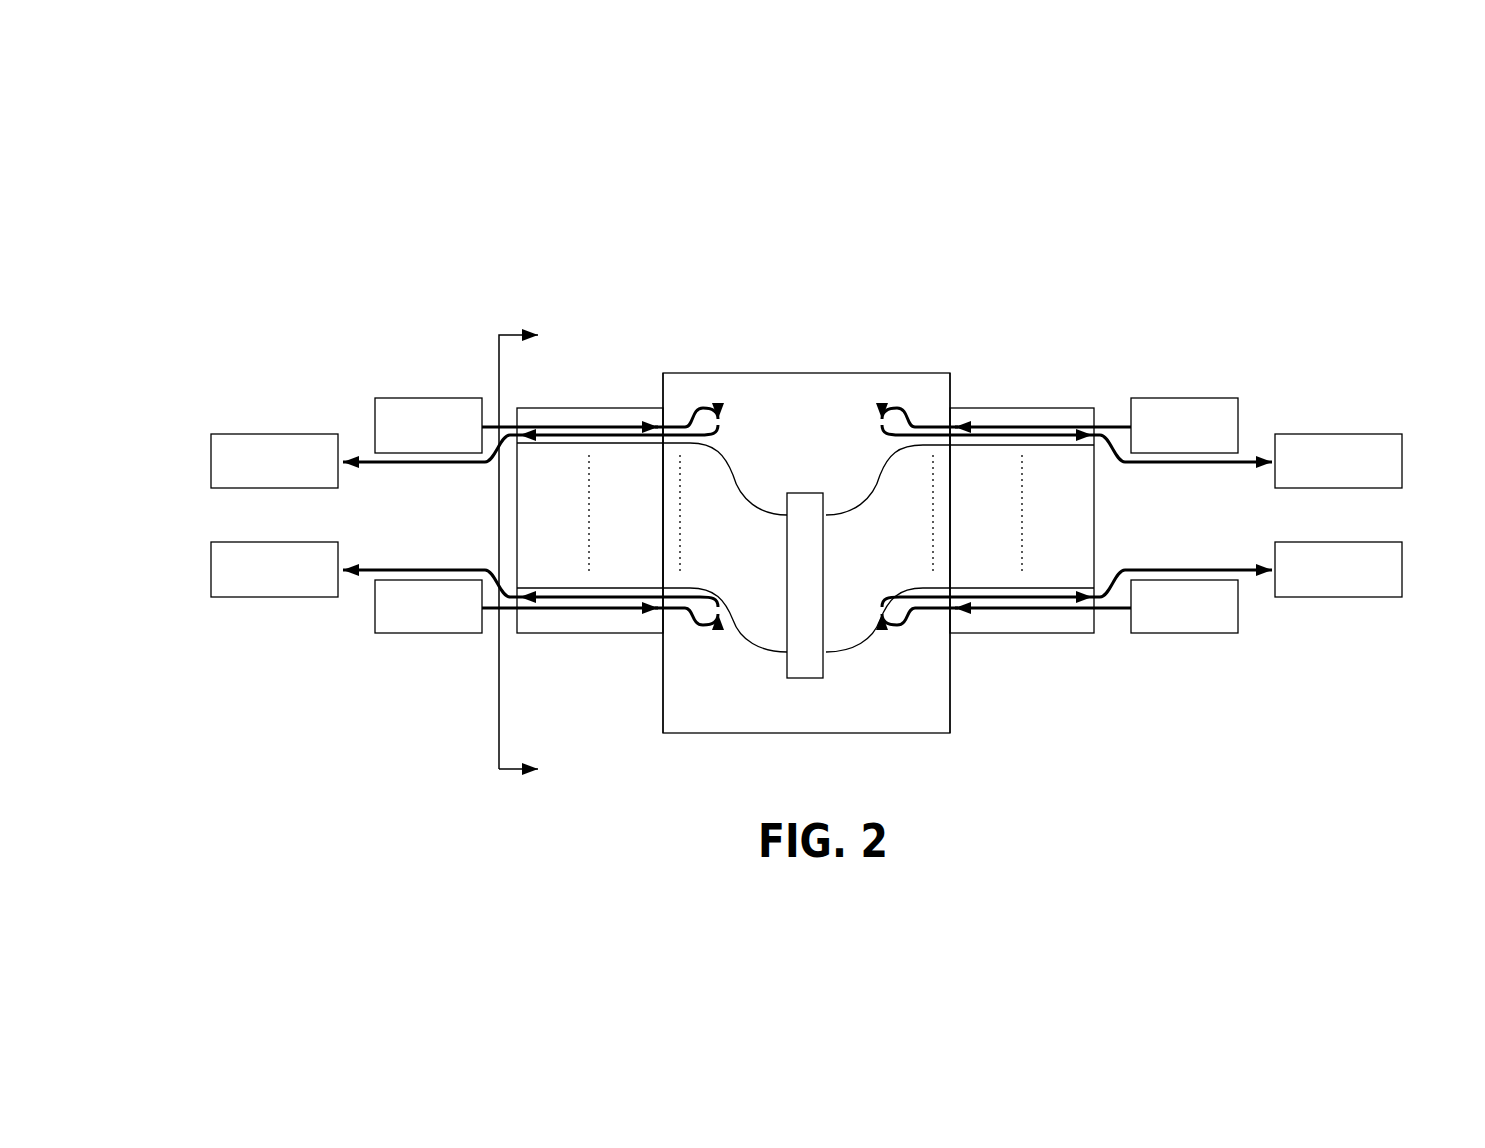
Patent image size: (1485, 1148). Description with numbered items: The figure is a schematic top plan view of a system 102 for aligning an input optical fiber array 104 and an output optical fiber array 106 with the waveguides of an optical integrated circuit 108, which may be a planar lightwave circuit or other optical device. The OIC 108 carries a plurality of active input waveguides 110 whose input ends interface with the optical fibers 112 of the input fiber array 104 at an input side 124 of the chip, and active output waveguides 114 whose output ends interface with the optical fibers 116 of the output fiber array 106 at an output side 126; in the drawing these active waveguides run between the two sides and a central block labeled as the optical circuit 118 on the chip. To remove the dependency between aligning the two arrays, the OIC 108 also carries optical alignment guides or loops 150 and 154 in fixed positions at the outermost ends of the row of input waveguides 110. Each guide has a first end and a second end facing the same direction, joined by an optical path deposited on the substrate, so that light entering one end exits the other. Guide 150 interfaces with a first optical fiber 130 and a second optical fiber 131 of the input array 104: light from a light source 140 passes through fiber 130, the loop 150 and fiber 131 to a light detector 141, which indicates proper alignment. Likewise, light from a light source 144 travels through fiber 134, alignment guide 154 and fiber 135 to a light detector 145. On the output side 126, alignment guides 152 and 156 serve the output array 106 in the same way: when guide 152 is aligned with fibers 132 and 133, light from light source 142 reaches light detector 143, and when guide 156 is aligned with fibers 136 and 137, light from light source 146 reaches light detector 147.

The system 102 is at (816, 517).
The input optical fiber array 104 is at (653, 407).
The output optical fiber array 106 is at (960, 407).
The optical integrated circuit 108 is at (838, 373).
The active input waveguides 110 is at (732, 470).
The optical fibers 112 is at (597, 445).
The active output waveguides 114 is at (830, 515).
The optical fibers 116 is at (1017, 447).
The optical circuit 118 is at (787, 538).
The input side 124 is at (662, 713).
The output side 126 is at (951, 713).
The first optical fiber 130 is at (587, 427).
The second optical fiber 131 is at (587, 437).
The optical fiber 132 is at (1025, 427).
The optical fiber 133 is at (1025, 437).
The first optical fiber 134 is at (587, 606).
The second optical fiber 135 is at (587, 597).
The optical fiber 136 is at (1025, 606).
The optical fiber 137 is at (1025, 597).
The light source 140 is at (385, 398).
The light detector 141 is at (232, 434).
The light source 142 is at (1230, 398).
The light detector 143 is at (1388, 434).
The light source 144 is at (385, 633).
The light detector 145 is at (232, 597).
The light source 146 is at (1230, 633).
The light detector 147 is at (1388, 597).
The optical alignment guide 150 is at (727, 403).
The optical alignment guide 152 is at (872, 423).
The optical alignment guide 154 is at (695, 632).
The optical alignment guide 156 is at (920, 632).